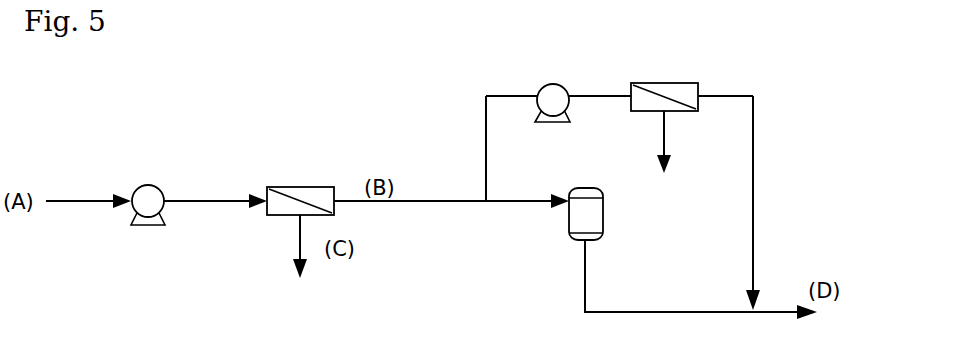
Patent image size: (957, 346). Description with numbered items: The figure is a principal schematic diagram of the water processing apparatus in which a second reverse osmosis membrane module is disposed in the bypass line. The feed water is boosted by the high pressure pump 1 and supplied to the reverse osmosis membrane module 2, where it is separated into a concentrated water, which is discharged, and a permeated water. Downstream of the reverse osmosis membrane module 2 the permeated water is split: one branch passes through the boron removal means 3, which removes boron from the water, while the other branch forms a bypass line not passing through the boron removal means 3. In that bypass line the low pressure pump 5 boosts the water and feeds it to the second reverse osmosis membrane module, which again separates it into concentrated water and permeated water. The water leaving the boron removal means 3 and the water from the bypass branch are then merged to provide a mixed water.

The high pressure pump 1 is at (158, 187).
The reverse osmosis membrane module 2 is at (306, 186).
The boron removal means 3 is at (576, 242).
The low pressure pump 5 is at (560, 85).